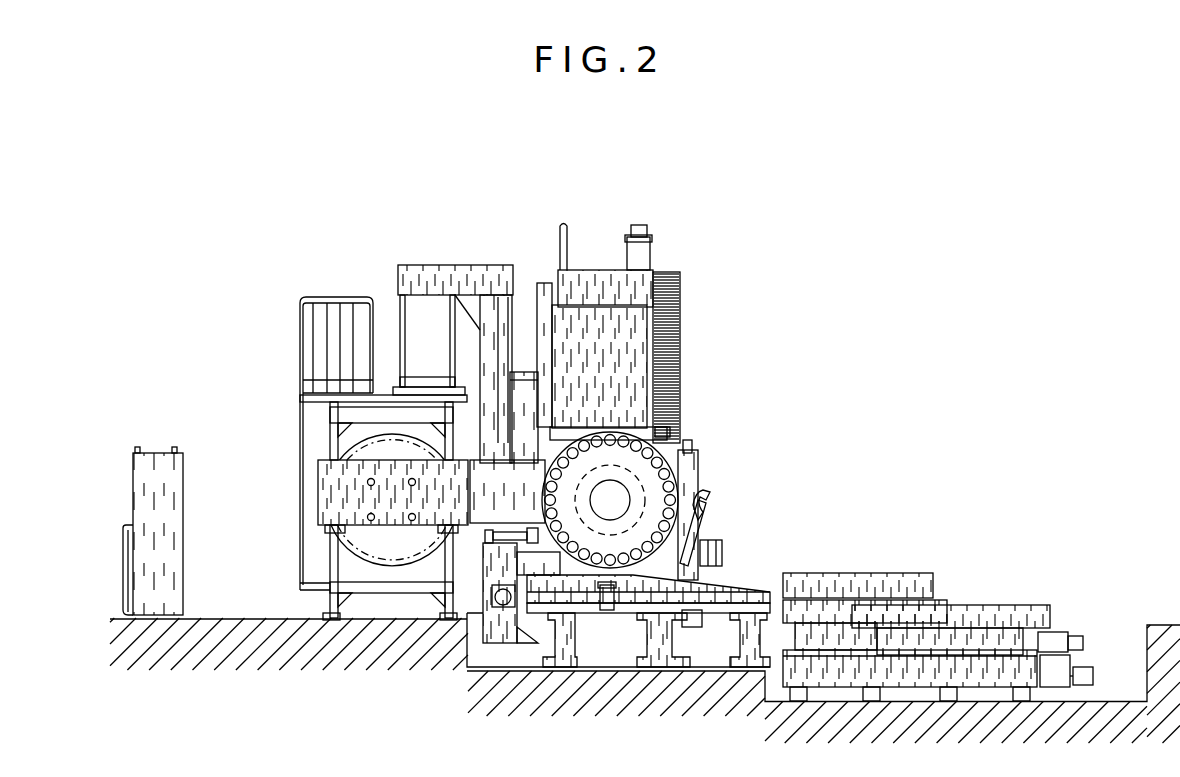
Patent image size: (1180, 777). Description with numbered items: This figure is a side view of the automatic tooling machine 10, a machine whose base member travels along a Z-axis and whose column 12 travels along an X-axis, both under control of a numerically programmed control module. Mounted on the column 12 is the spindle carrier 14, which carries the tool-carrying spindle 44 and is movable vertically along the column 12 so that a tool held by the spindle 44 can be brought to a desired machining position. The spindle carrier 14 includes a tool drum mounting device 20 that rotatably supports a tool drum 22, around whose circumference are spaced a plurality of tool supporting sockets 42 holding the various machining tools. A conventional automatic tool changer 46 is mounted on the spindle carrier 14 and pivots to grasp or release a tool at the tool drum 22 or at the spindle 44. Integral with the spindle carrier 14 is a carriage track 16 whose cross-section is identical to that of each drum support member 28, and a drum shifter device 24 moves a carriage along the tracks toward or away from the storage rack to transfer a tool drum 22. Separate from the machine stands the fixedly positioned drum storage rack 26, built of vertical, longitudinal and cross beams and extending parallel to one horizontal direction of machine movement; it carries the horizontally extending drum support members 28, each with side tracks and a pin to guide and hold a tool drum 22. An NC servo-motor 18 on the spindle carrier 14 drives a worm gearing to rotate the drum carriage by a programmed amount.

The automatic tooling machine 10 is at (696, 501).
The column 12 is at (617, 342).
The spindle carrier 14 is at (685, 468).
The carriage track 16 is at (492, 497).
The NC servo-motor 18 is at (510, 545).
The tool drum mounting device 20 is at (608, 508).
The tool drum 22 is at (377, 562).
The drum shifter device 24 is at (568, 439).
The drum storage rack 26 is at (330, 422).
The drum support member 28 is at (343, 485).
The tool supporting socket 42 is at (677, 487).
The tool-carrying spindle 44 is at (722, 545).
The automatic tool changer 46 is at (693, 525).